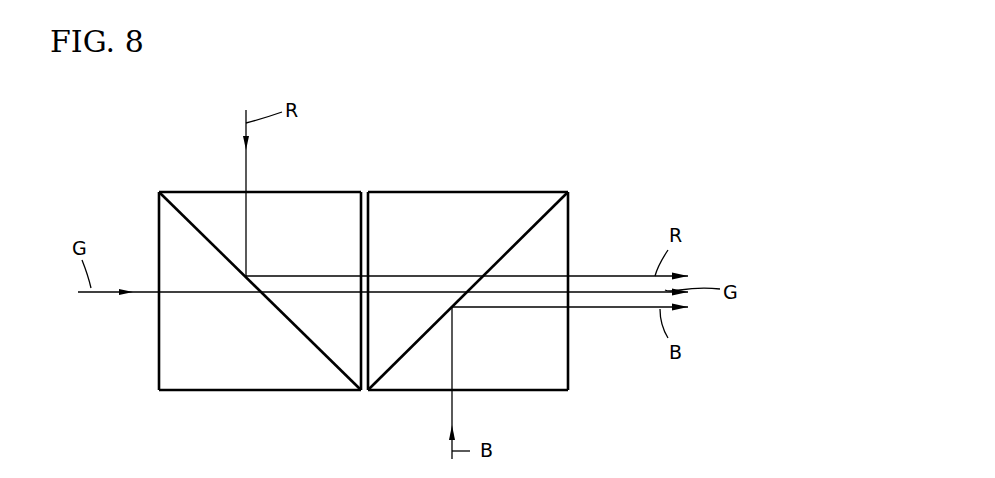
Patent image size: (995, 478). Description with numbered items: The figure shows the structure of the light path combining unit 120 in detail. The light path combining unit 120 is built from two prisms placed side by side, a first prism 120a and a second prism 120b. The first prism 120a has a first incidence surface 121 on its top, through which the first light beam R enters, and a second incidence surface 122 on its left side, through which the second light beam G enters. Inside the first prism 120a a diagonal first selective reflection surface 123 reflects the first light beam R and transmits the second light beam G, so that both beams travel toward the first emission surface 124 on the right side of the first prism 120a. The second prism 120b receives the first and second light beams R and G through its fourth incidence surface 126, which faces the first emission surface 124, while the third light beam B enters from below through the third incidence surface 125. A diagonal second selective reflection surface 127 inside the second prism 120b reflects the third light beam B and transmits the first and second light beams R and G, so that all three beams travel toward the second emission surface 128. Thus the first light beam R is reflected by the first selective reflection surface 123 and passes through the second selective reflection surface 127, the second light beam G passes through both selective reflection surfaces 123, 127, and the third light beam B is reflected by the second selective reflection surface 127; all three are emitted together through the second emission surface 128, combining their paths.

The light path combining unit 120 is at (605, 121).
The first prism 120a is at (351, 186).
The second prism 120b is at (544, 184).
The first incidence surface 121 is at (180, 191).
The second incidence surface 122 is at (158, 212).
The first selective reflection surface 123 is at (197, 230).
The first emission surface 124 is at (361, 220).
The third incidence surface 125 is at (540, 392).
The fourth incidence surface 126 is at (368, 237).
The second selective reflection surface 127 is at (503, 255).
The second emission surface 128 is at (568, 218).